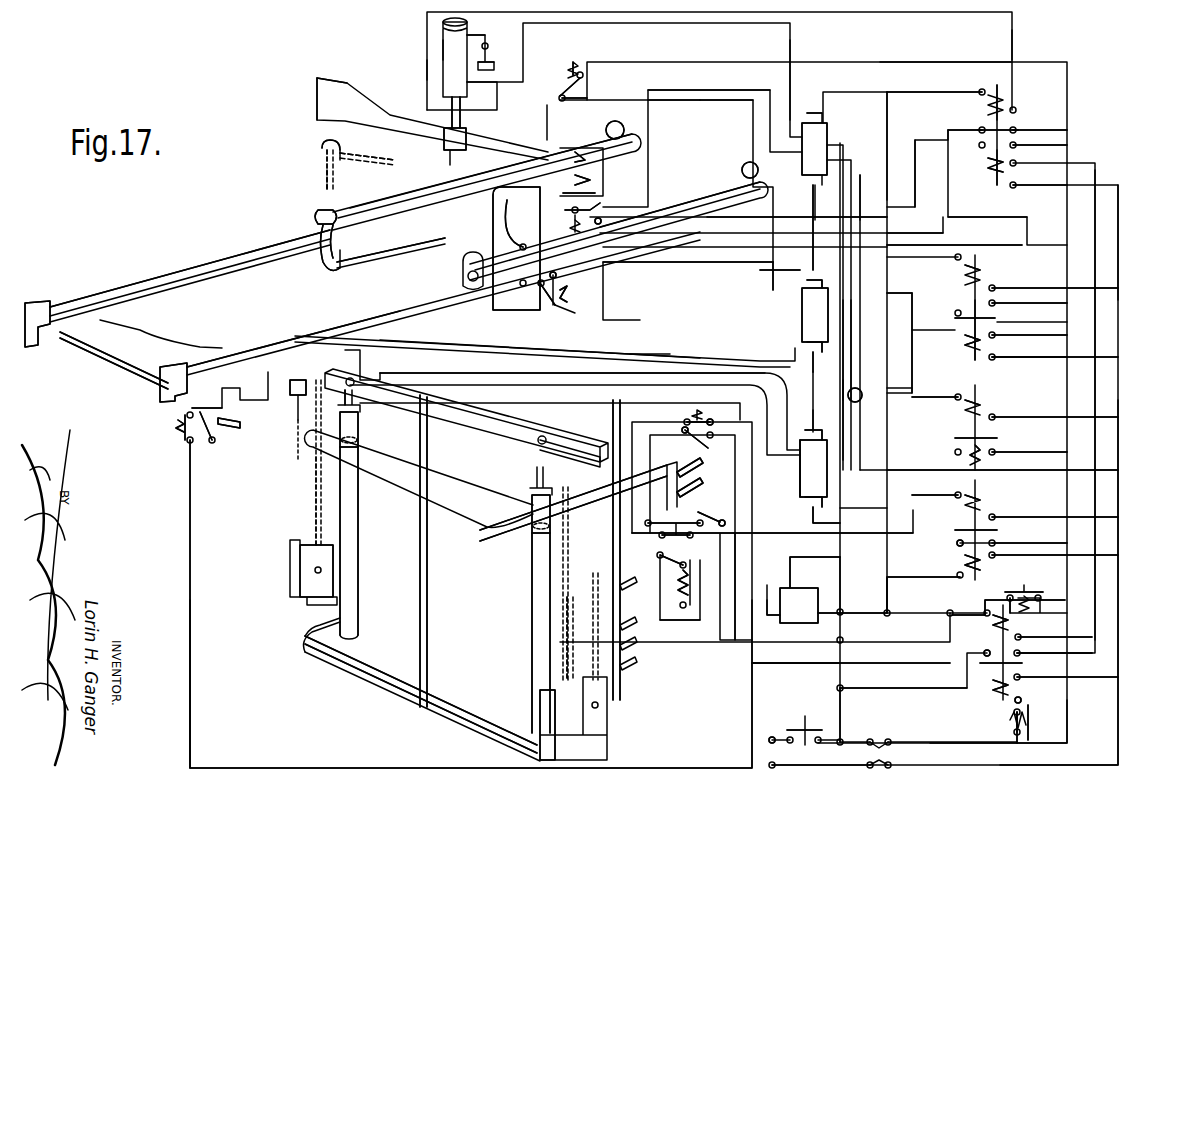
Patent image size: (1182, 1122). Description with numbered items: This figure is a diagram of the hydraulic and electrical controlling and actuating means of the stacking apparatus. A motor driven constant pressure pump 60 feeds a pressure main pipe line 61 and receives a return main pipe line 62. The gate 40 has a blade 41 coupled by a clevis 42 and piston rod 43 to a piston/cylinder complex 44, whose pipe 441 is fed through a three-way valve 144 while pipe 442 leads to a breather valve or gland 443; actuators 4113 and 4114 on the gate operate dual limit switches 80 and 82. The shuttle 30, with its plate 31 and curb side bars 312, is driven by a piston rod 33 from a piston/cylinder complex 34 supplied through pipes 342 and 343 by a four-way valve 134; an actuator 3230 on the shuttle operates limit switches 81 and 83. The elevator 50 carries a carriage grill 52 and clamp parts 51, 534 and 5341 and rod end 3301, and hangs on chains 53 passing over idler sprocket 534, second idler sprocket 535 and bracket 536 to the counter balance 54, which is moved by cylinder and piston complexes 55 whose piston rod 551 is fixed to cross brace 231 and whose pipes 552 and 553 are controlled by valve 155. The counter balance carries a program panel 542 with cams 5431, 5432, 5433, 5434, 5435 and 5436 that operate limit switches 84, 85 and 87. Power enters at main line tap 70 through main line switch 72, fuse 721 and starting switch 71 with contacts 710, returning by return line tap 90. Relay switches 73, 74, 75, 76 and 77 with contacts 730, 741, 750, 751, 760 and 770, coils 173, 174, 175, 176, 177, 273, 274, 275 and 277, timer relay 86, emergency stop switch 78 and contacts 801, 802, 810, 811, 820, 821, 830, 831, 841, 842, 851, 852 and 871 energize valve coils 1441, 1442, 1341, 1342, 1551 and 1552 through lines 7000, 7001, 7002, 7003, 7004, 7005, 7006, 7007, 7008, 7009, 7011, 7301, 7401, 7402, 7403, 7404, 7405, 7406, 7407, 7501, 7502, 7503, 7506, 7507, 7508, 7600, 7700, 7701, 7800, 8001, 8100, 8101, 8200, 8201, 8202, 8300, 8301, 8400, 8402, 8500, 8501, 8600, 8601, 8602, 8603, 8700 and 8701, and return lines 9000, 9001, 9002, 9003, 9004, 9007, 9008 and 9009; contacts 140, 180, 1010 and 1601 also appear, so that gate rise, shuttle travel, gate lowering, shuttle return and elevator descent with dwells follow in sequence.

The gate 40 is at (315, 78).
The blade 41 is at (335, 103).
The clevis 42 is at (450, 140).
The piston rod 43 is at (460, 105).
The piston/cylinder complex 44 is at (443, 43).
The pipe 441 is at (790, 78).
The pipe 442 is at (476, 36).
The breather valve or gland 443 is at (487, 47).
The shuttle 30 is at (92, 365).
The plate 31 is at (135, 350).
The curb side bar 312 is at (218, 345).
The piston rod 33 is at (180, 271).
The piston/cylinder complex 34 is at (403, 207).
The pipe 342 is at (606, 130).
The pipe 343 is at (316, 217).
The elevator 50 is at (315, 265).
The clamp 51 is at (325, 280).
The carriage grill 52 is at (408, 246).
The chain 53 is at (322, 148).
The idler sprocket 534 is at (322, 158).
The arm 5341 is at (350, 158).
The rod end 3301 is at (320, 182).
The second idler sprocket 535 is at (598, 708).
The bracket 536 is at (302, 379).
The counter balance 54 is at (400, 633).
The cylinder and piston complex 55 is at (382, 565).
The piston rod 551 is at (540, 478).
The pipe 552 is at (800, 460).
The pipe 553 is at (597, 405).
The program panel 542 is at (613, 522).
The cam 5431 is at (695, 488).
The cam 5432 is at (622, 580).
The cam 5433 is at (640, 630).
The cam 5434 is at (640, 650).
The cam 5435 is at (640, 670).
The cam 5436 is at (696, 466).
The cross brace 231 is at (575, 448).
The actuator 3230 is at (232, 422).
The pump 60 is at (860, 396).
The pressure main pipe line 61 is at (855, 340).
The return main pipe line 62 is at (843, 382).
The main line tap 70 is at (772, 737).
The starting switch 71 is at (1030, 715).
The main line switch 72 is at (805, 716).
The fuse 721 is at (888, 742).
The relay switch 73 is at (985, 668).
The contacts 730 is at (985, 652).
The relay switch 74 is at (990, 170).
The contacts 741 is at (978, 128).
The relay switch 75 is at (960, 338).
The contacts 750 is at (958, 310).
The contacts 751 is at (955, 320).
The relay 76 is at (988, 428).
The contacts 760 is at (958, 455).
The relay 77 is at (965, 528).
The contacts 770 is at (960, 543).
The emergency stop switch 78 is at (1025, 588).
The dual limit switch 80 is at (590, 75).
The contacts 801 is at (590, 96).
The contacts 802 is at (568, 70).
The limit switch 81 is at (567, 292).
The contacts 810 is at (553, 280).
The contacts 811 is at (555, 308).
The dual limit switch 82 is at (600, 215).
The contacts 820 is at (603, 205).
The contacts 821 is at (600, 224).
The dual limit switch 83 is at (195, 455).
The contacts 830 is at (214, 445).
The contacts 831 is at (185, 425).
The dual limit switch 84 is at (683, 422).
The contacts 841 is at (716, 425).
The contacts 842 is at (690, 448).
The line 8402 is at (664, 431).
The single direction operational dual limit switch 85 is at (660, 557).
The contacts 851 is at (686, 540).
The contacts 852 is at (679, 588).
The timer relay 86 is at (799, 605).
The limit switch 87 is at (698, 520).
The contacts 871 is at (717, 522).
The return line tap 90 is at (810, 765).
The four-way valve 134 is at (802, 318).
The operating coil 1341 is at (807, 286).
The operating coil 1342 is at (807, 348).
The contact 140 is at (985, 158).
The three-way valve 144 is at (827, 130).
The actuating coil 1441 is at (813, 200).
The operating solenoid 1442 is at (822, 115).
The valve 155 is at (800, 490).
The operating coil 1551 is at (822, 447).
The operating coil 1552 is at (805, 505).
The solenoid 173 is at (995, 690).
The solenoid 174 is at (1005, 172).
The solenoid 175 is at (978, 268).
The coil 176 is at (982, 405).
The solenoid 177 is at (982, 500).
The contact 180 is at (1022, 612).
The solenoid 273 is at (995, 622).
The solenoid 274 is at (982, 92).
The coil 275 is at (992, 365).
The solenoid 277 is at (965, 565).
The contacts 710 is at (1015, 710).
The wire 1010 is at (1012, 543).
The wire 1601 is at (813, 425).
The line 7000 is at (903, 62).
The line 7001 is at (878, 688).
The line 7002 is at (1014, 732).
The line 7003 is at (1018, 150).
The line 7004 is at (1035, 300).
The line 7005 is at (960, 258).
The line 7006 is at (1030, 130).
The line 7007 is at (1010, 335).
The line 7008 is at (1005, 452).
The line 7009 is at (840, 688).
The line 7011 is at (1020, 637).
The line 7301 is at (1085, 170).
The line 7401 is at (1020, 195).
The line 7402 is at (676, 118).
The line 7403 is at (703, 103).
The line 7404 is at (862, 175).
The line 7405 is at (900, 92).
The line 7406 is at (948, 130).
The line 7407 is at (887, 92).
The line 7501 is at (703, 262).
The line 7502 is at (805, 280).
The line 7503 is at (912, 305).
The line 7506 is at (1005, 362).
The line 7507 is at (912, 362).
The line 7508 is at (813, 372).
The line 7600 is at (840, 470).
The line 7700 is at (840, 515).
The line 7701 is at (800, 525).
The line 7800 is at (970, 615).
The line 8001 is at (547, 118).
The line 8100 is at (535, 225).
The line 8101 is at (427, 67).
The line 8200 is at (698, 90).
The line 8201 is at (512, 216).
The line 8202 is at (958, 222).
The line 8300 is at (693, 360).
The line 8301 is at (752, 740).
The line 8400 is at (630, 466).
The line 8500 is at (915, 400).
The line 8501 is at (850, 663).
The line 8600 is at (840, 620).
The line 8601 is at (767, 600).
The line 8602 is at (840, 575).
The line 8603 is at (958, 495).
The line 8700 is at (674, 515).
The line 8701 is at (887, 580).
The line 9000 is at (1120, 452).
The line 9001 is at (1020, 680).
The line 9002 is at (1122, 207).
The line 9003 is at (1004, 470).
The line 9004 is at (1030, 288).
The line 9007 is at (1025, 520).
The line 9008 is at (1000, 557).
The line 9009 is at (1020, 653).
The actuator 4113 is at (570, 162).
The actuator 4114 is at (575, 178).